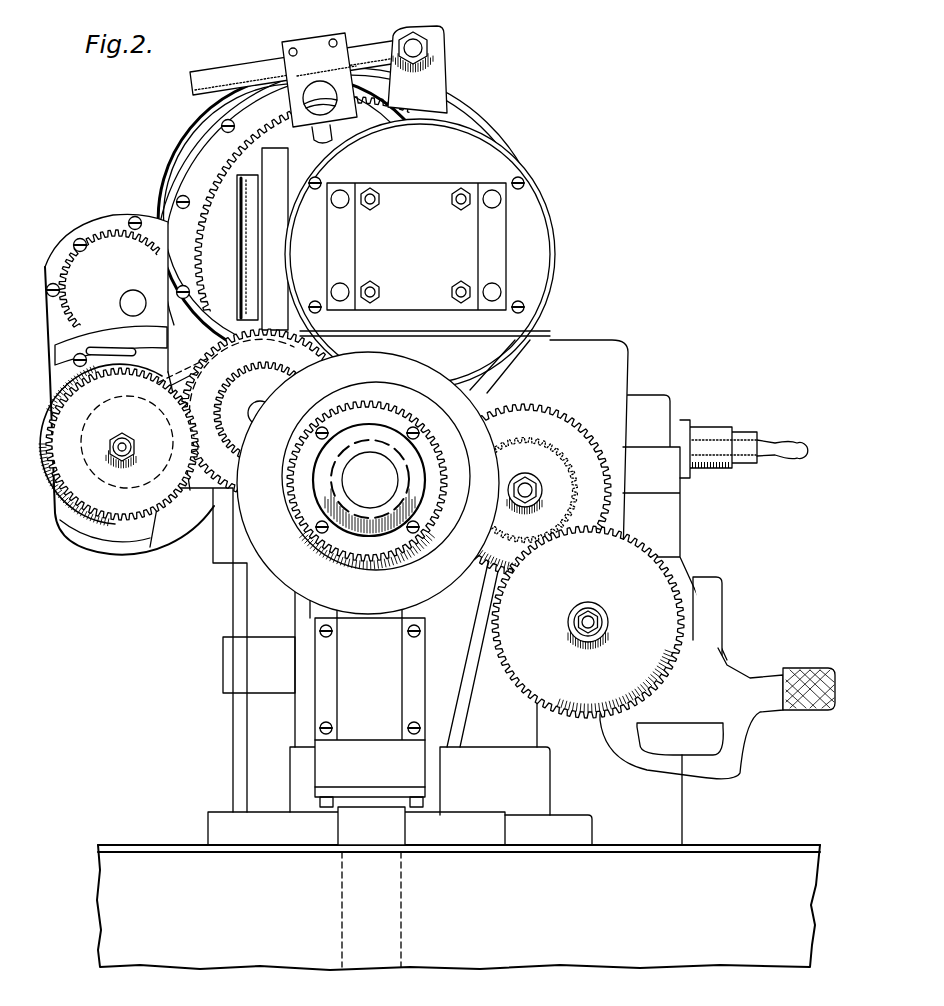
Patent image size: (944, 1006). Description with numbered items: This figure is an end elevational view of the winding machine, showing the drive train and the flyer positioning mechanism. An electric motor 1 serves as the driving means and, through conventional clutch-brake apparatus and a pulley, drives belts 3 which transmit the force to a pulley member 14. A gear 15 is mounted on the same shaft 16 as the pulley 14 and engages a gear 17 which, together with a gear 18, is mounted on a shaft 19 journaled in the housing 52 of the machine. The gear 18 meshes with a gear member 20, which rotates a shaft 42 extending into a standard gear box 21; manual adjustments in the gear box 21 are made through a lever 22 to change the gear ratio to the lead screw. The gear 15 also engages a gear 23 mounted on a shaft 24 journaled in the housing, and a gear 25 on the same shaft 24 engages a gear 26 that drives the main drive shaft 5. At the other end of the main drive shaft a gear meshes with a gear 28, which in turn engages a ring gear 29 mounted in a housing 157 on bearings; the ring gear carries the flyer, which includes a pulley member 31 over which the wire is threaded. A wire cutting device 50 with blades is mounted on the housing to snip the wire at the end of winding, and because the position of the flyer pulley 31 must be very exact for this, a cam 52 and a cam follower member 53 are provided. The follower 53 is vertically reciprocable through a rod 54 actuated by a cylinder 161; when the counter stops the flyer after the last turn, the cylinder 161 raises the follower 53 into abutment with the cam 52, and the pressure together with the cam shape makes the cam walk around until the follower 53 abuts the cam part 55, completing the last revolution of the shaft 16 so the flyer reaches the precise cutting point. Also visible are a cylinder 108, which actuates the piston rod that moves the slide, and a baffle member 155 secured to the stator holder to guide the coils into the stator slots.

The electric motor 1 is at (132, 384).
The belts 3 is at (470, 705).
The main drive shaft 5 is at (134, 443).
The pulley member 14 is at (368, 483).
The gear 15 is at (396, 425).
The shaft 16 is at (370, 486).
The gear 17 is at (527, 487).
The gear 18 is at (578, 460).
The shaft 19 is at (534, 493).
The gear member 20 is at (588, 618).
The gear box 21 is at (724, 605).
The lever 22 is at (799, 672).
The gear 23 is at (314, 388).
The shaft 24 is at (257, 404).
The gear 25 is at (215, 455).
The gear 26 is at (122, 477).
The gear 28 is at (110, 240).
The ring gear 29 is at (205, 178).
The pulley member 31 is at (360, 62).
The shaft 42 is at (608, 622).
The wire cutting device 50 is at (288, 58).
The cam 52 is at (550, 312).
The cam follower member 53 is at (388, 563).
The rod 54 is at (375, 578).
The cam part 55 is at (390, 584).
The cylinder 108 is at (443, 352).
The baffle member 155 is at (240, 235).
The housing 157 is at (470, 125).
The cylinder 161 is at (342, 913).